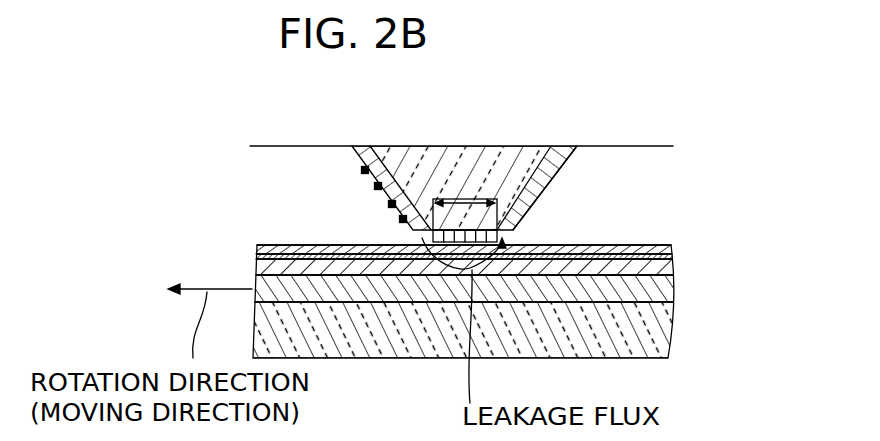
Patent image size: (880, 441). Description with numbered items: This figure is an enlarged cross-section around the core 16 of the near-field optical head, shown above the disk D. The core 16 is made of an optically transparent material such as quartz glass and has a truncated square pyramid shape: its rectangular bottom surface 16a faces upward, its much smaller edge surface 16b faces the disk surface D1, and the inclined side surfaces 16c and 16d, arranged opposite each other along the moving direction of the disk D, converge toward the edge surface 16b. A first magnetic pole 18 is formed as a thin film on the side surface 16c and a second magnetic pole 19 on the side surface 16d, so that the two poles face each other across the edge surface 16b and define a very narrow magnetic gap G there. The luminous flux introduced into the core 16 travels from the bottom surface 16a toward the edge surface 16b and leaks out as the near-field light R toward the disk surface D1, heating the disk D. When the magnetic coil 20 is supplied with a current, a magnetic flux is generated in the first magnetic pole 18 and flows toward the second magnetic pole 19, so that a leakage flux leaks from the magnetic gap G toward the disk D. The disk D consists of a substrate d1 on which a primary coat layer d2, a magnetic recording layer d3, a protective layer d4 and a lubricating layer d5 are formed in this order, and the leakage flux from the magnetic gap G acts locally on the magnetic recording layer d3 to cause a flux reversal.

The core 16 is at (545, 146).
The bottom surface 16a is at (510, 146).
The edge surface 16b is at (470, 228).
The side surface 16c is at (386, 146).
The side surface 16d is at (552, 146).
The first magnetic pole 18 is at (364, 172).
The magnetic coil 20 is at (373, 207).
The second magnetic pole 19 is at (553, 177).
The magnetic gap G is at (466, 199).
The near-field light R is at (415, 240).
The disk D is at (506, 286).
The disk surface D1 is at (643, 245).
The substrate d1 is at (676, 333).
The primary coat layer d2 is at (675, 293).
The magnetic recording layer d3 is at (675, 268).
The protective layer d4 is at (675, 257).
The lubricating layer d5 is at (675, 248).